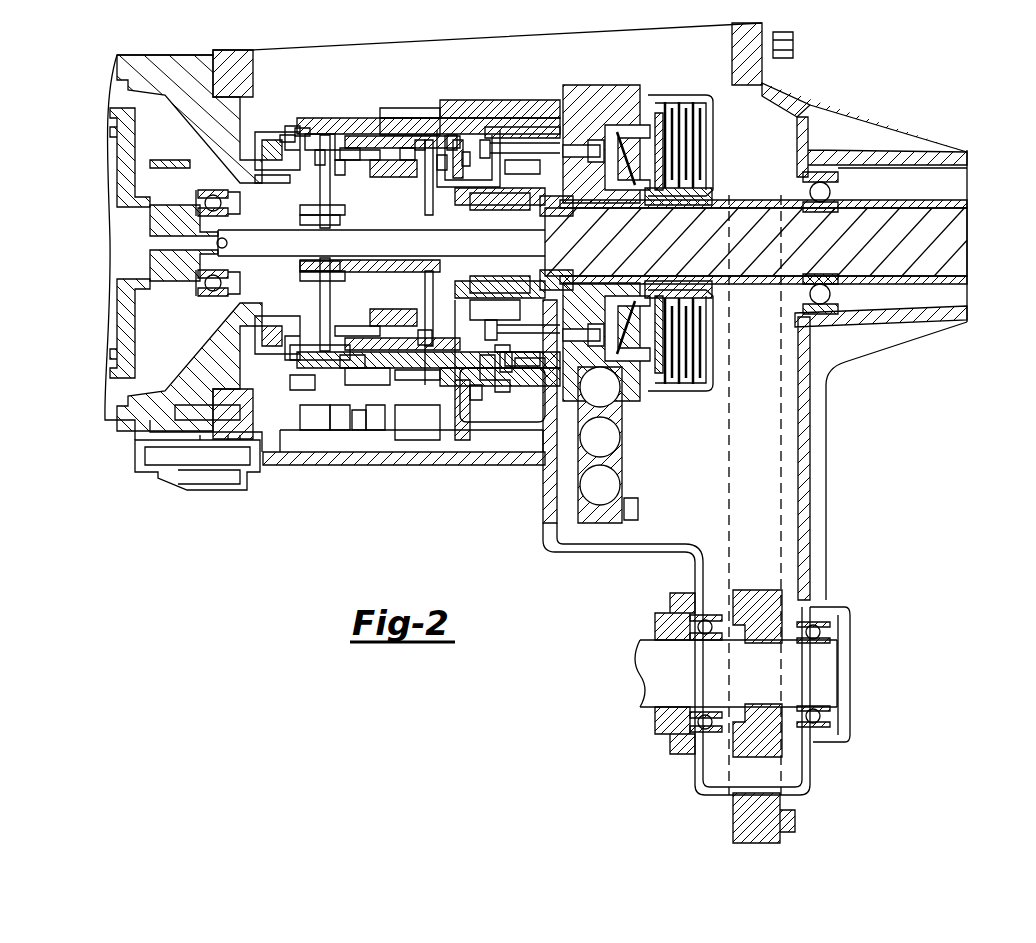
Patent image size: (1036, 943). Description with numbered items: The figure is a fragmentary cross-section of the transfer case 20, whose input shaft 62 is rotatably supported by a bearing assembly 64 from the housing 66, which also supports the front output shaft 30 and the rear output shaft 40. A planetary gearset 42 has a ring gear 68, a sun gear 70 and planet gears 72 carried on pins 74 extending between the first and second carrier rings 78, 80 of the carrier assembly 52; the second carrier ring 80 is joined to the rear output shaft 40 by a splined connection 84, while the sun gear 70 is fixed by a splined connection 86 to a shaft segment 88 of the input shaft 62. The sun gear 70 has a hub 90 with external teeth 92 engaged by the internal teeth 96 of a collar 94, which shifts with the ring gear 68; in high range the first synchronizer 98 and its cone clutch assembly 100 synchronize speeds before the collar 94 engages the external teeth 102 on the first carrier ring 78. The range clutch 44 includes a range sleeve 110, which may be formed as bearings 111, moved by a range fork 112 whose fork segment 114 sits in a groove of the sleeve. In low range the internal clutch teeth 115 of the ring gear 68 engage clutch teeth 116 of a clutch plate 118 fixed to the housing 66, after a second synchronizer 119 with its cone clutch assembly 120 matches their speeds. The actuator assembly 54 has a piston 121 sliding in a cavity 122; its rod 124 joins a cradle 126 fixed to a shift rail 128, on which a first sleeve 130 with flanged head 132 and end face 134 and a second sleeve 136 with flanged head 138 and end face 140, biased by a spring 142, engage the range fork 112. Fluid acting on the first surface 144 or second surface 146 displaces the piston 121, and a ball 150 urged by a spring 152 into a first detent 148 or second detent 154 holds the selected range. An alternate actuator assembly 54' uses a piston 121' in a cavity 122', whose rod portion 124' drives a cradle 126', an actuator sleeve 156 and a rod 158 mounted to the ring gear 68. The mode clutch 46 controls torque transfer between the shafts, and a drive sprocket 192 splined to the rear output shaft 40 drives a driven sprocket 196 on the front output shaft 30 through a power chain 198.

The transfer case 20 is at (935, 92).
The front output shaft 30 is at (665, 680).
The rear output shaft 40 is at (958, 242).
The planetary gearset 42 is at (392, 116).
The range clutch 44 is at (318, 116).
The mode clutch 46 is at (715, 125).
The carrier assembly 52 is at (490, 198).
The actuator assembly 54 is at (487, 289).
The alternate actuator assembly 54' is at (522, 87).
The input shaft 62 is at (160, 222).
The bearing assembly 64 is at (183, 280).
The housing 66 is at (195, 160).
The ring gear 68 is at (420, 145).
The sun gear 70 is at (372, 229).
The planet gears 72 is at (458, 176).
The pins 74 is at (405, 148).
The first carrier ring 78 is at (410, 162).
The second carrier ring 80 is at (485, 204).
The splined connection 84 is at (410, 272).
The splined connection 86 is at (292, 278).
The shaft segment 88 is at (268, 206).
The hub 90 is at (350, 200).
The external teeth 92 is at (318, 150).
The collar 94 is at (350, 142).
The internal teeth 96 is at (355, 150).
The first synchronizer 98 is at (350, 182).
The cone clutch assembly 100 is at (330, 198).
The external teeth 102 is at (405, 110).
The range sleeve 110 is at (355, 366).
The bearings 111 is at (375, 355).
The range fork 112 is at (290, 352).
The fork segment 114 is at (355, 372).
The internal clutch teeth 115 is at (338, 142).
The clutch teeth 116 is at (290, 140).
The clutch plate 118 is at (280, 136).
The second synchronizer 119 is at (302, 128).
The cone clutch assembly 120 is at (262, 152).
The piston 121 is at (515, 370).
The piston 121' is at (536, 113).
The cavity 122 is at (382, 264).
The cavity 122' is at (617, 139).
The rod 124 is at (495, 321).
The rod portion 124' is at (511, 113).
The cradle 126 is at (430, 351).
The cradle 126' is at (470, 134).
The shift rail 128 is at (455, 440).
The first sleeve 130 is at (315, 432).
The flanged head 132 is at (338, 432).
The end face 134 is at (295, 384).
The second sleeve 136 is at (405, 382).
The flanged head 138 is at (372, 432).
The end face 140 is at (418, 442).
The spring 142 is at (358, 432).
The first surface 144 is at (524, 360).
The second surface 146 is at (504, 352).
The first detent 148 is at (490, 360).
The ball 150 is at (493, 345).
The spring 152 is at (502, 385).
The second detent 154 is at (480, 380).
The actuator sleeve 156 is at (441, 160).
The rod 158 is at (452, 138).
The drive sprocket 192 is at (766, 160).
The driven sprocket 196 is at (752, 598).
The power chain 198 is at (812, 440).